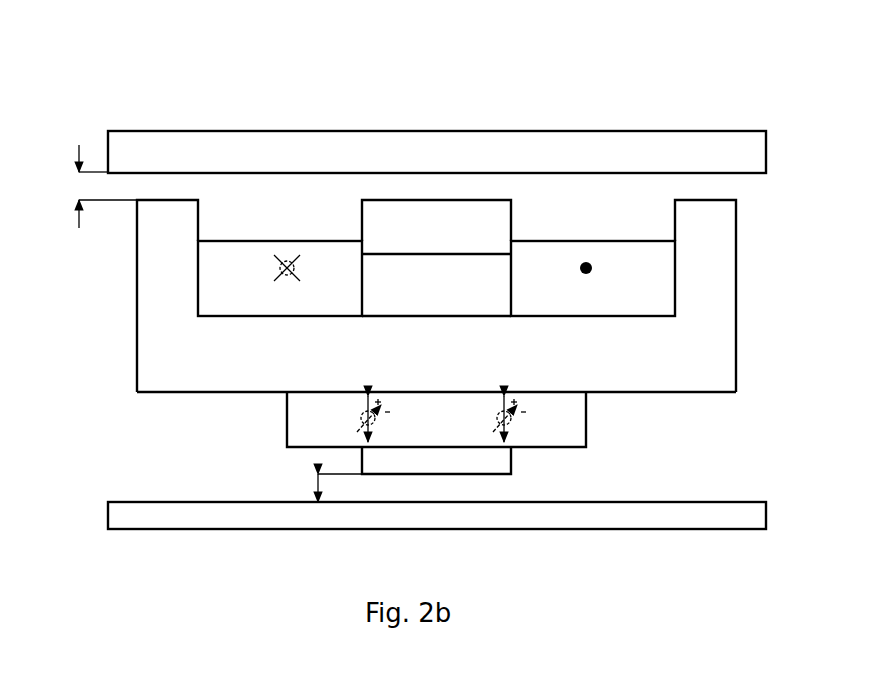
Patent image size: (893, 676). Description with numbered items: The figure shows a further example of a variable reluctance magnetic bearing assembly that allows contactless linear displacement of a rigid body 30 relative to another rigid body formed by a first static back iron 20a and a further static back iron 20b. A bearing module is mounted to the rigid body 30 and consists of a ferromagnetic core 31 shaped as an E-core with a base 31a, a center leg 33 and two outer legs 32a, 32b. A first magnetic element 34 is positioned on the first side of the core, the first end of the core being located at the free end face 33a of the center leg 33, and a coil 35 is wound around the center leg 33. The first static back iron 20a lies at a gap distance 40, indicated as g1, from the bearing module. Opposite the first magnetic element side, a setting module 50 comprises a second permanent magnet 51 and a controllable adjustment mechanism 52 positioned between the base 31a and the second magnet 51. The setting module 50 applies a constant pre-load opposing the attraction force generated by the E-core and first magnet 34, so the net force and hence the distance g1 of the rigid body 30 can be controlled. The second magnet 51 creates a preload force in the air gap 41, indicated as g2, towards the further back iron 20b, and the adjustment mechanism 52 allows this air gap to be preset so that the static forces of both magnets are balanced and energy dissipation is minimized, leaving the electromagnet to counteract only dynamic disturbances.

The first static back iron 20a is at (657, 148).
The further static back iron 20b is at (652, 520).
The rigid body 30 is at (410, 258).
The ferromagnetic core 31 is at (410, 258).
The base 31a is at (212, 377).
The outer leg 32a is at (162, 277).
The outer leg 32b is at (710, 266).
The center leg 33 is at (468, 283).
The free end face 33a is at (398, 253).
The first magnetic element 34 is at (423, 215).
The coil 35 is at (245, 266).
The gap distance 40 is at (143, 186).
The air gap 41 is at (388, 487).
The setting module 50 is at (410, 444).
The second permanent magnet 51 is at (497, 462).
The controllable adjustment mechanism 52 is at (610, 430).
The gap distance g1 is at (108, 224).
The air gap g2 is at (295, 478).